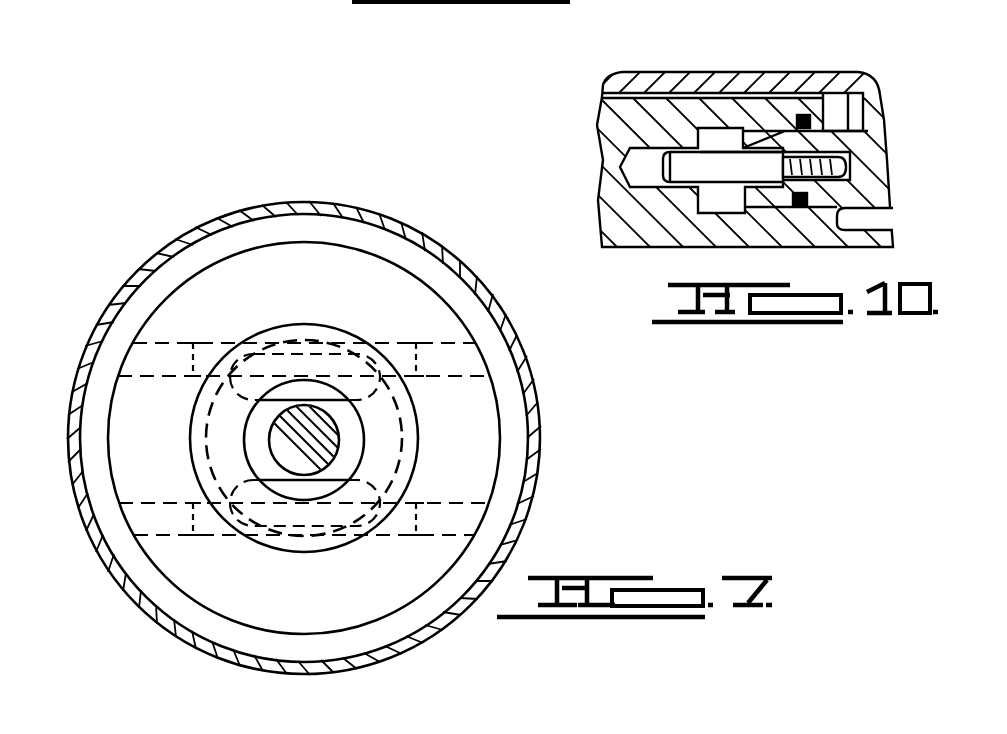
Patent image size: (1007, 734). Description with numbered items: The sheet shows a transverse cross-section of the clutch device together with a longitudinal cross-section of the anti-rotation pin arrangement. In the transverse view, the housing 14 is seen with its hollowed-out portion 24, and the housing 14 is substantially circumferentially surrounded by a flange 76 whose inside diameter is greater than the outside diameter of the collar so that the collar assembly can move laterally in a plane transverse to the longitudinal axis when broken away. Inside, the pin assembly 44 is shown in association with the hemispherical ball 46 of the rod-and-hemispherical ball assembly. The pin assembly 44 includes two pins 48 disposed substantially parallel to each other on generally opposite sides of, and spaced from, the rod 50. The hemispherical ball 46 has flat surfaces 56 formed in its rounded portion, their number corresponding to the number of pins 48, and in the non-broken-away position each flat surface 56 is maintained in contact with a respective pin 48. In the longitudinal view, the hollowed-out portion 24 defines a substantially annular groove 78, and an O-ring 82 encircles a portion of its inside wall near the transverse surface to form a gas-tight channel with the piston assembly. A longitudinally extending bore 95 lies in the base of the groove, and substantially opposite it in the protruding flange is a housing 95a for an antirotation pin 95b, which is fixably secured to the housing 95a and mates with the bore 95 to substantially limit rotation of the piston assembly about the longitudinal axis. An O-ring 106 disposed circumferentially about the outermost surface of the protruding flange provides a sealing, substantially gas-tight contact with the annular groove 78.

In FIG. 10, the housing 14 is at (601, 211).
In FIG. 7, the hollowed-out portion 24 is at (343, 233).
In FIG. 7, the pin assembly 44 is at (218, 326).
In FIG. 7, the hemispherical ball 46 is at (217, 446).
In FIG. 7, the pins 48 is at (455, 355).
In FIG. 7, the rod 50 is at (302, 425).
In FIG. 7, the flat surfaces 56 is at (250, 513).
In FIG. 7, the flange 76 is at (256, 212).
In FIG. 10, the annular groove 78 is at (708, 133).
In FIG. 10, the O-ring 82 is at (805, 117).
In FIG. 10, the bore 95 is at (647, 164).
In FIG. 10, the antirotation pin housing 95a is at (867, 144).
In FIG. 10, the antirotation pin 95b is at (722, 158).
In FIG. 10, the O-ring 106 is at (803, 203).